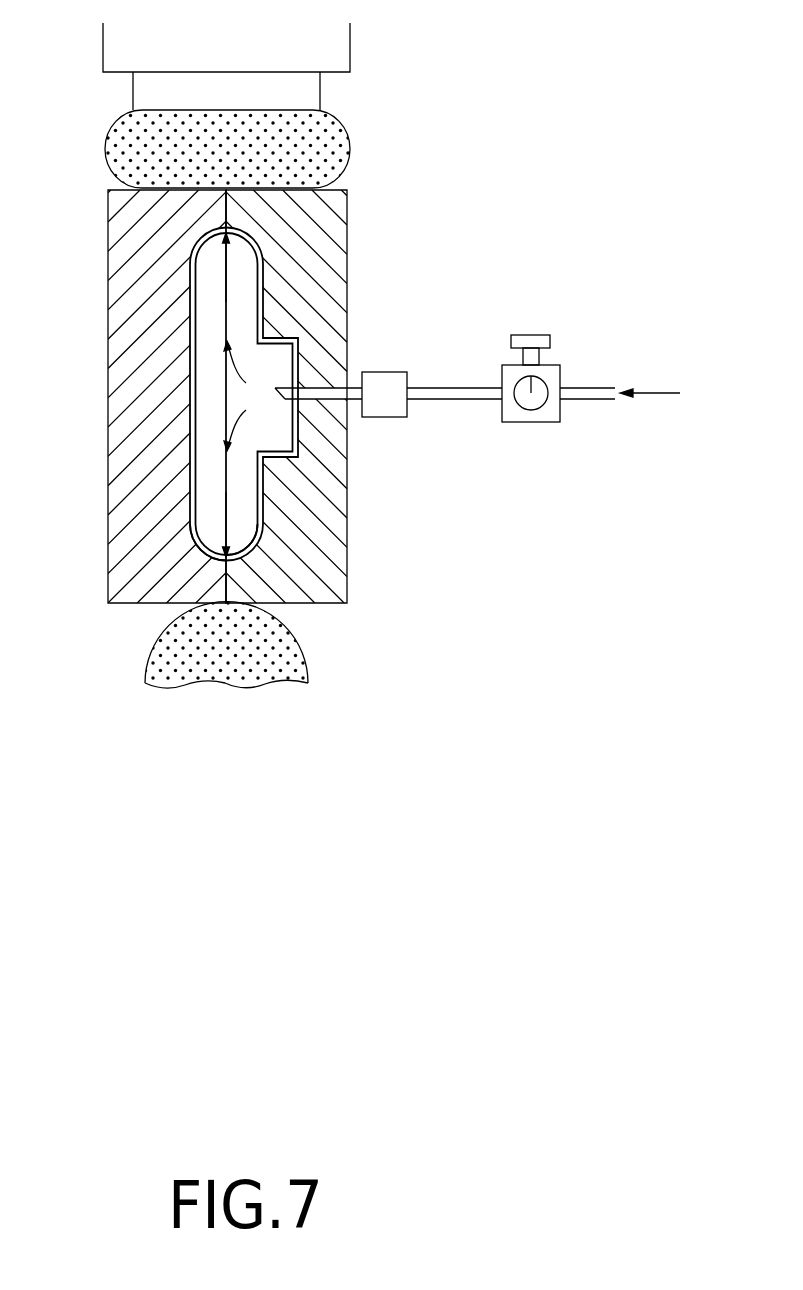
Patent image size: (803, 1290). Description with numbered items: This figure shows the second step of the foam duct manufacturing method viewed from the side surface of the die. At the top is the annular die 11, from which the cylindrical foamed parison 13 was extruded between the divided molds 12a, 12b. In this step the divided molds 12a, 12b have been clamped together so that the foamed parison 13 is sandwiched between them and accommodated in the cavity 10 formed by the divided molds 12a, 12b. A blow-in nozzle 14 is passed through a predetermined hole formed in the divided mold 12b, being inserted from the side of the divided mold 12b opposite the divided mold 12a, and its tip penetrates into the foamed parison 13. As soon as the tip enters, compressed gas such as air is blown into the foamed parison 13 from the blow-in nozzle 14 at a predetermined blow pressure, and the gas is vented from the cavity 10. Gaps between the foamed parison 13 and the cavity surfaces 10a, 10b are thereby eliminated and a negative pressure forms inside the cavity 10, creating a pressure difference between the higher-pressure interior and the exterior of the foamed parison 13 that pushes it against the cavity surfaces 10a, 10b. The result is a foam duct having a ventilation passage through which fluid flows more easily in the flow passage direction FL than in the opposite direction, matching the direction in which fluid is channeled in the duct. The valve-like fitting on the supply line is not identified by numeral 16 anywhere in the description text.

The annular die 11 is at (332, 43).
The foamed parison 13 is at (333, 148).
The divided mold 12a is at (120, 242).
The divided mold 12b is at (333, 238).
The cavity 10 is at (226, 400).
The cavity surface 10a is at (219, 541).
The cavity surface 10b is at (236, 540).
The flow passage direction FL is at (226, 286).
The blow-in nozzle 14 is at (336, 387).
The valve 16 is at (533, 424).